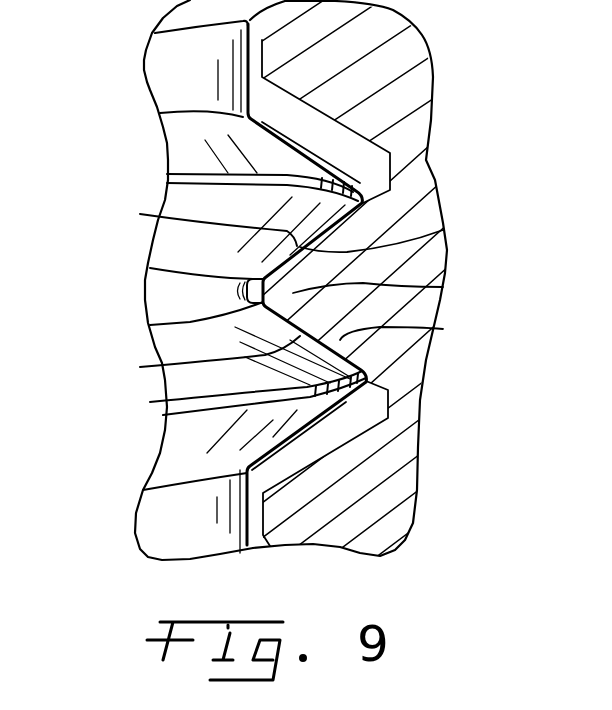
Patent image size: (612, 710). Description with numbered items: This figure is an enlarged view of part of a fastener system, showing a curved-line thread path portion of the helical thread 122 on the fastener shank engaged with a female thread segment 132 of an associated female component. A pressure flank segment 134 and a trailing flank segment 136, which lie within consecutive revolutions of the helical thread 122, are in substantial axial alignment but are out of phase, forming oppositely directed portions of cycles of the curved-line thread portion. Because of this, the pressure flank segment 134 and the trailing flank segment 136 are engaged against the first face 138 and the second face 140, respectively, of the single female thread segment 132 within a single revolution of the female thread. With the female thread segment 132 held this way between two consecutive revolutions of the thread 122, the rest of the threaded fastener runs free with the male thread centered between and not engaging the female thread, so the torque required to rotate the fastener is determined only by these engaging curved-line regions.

The thread 122 is at (343, 164).
The trailing flank segment 136 is at (140, 214).
The pressure flank segment 134 is at (140, 367).
The second face 140 is at (443, 230).
The female thread segment 132 is at (443, 287).
The first face 138 is at (443, 329).